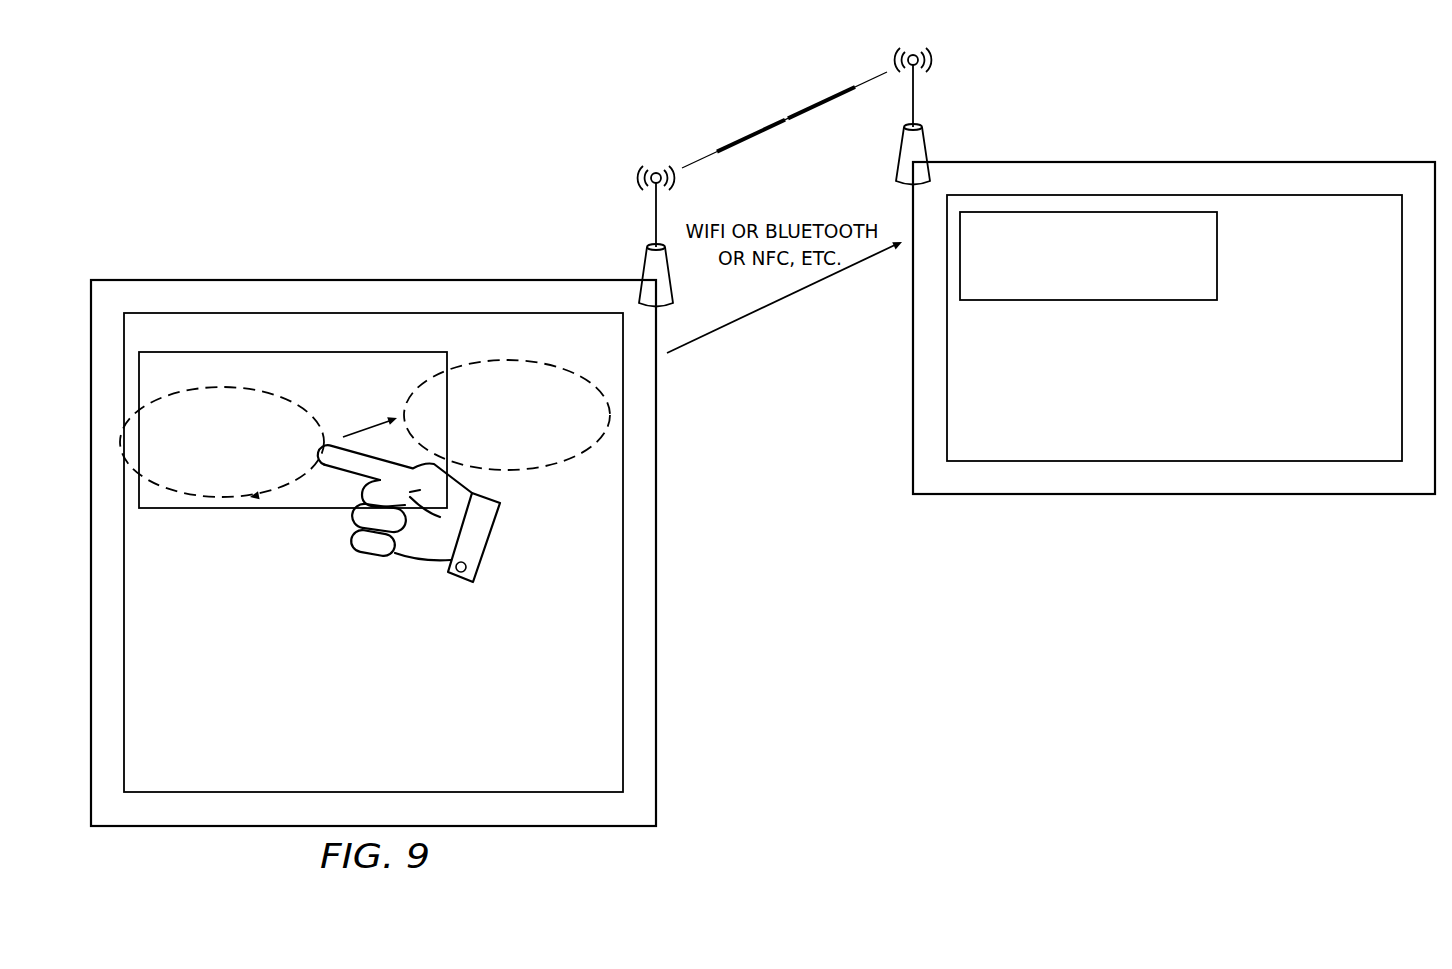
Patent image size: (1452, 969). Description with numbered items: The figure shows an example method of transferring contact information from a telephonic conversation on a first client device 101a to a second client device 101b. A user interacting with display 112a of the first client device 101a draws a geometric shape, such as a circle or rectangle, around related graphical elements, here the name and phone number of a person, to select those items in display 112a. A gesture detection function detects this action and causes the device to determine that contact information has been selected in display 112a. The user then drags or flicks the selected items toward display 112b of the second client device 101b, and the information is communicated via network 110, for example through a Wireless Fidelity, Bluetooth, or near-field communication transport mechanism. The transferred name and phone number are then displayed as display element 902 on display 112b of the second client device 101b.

The first client device 101a is at (373, 522).
The second client device 101b is at (1174, 299).
The network 110 is at (764, 126).
The display of first client device 112a is at (198, 767).
The display of second client device 112b is at (1174, 328).
The display element 902 is at (1217, 255).